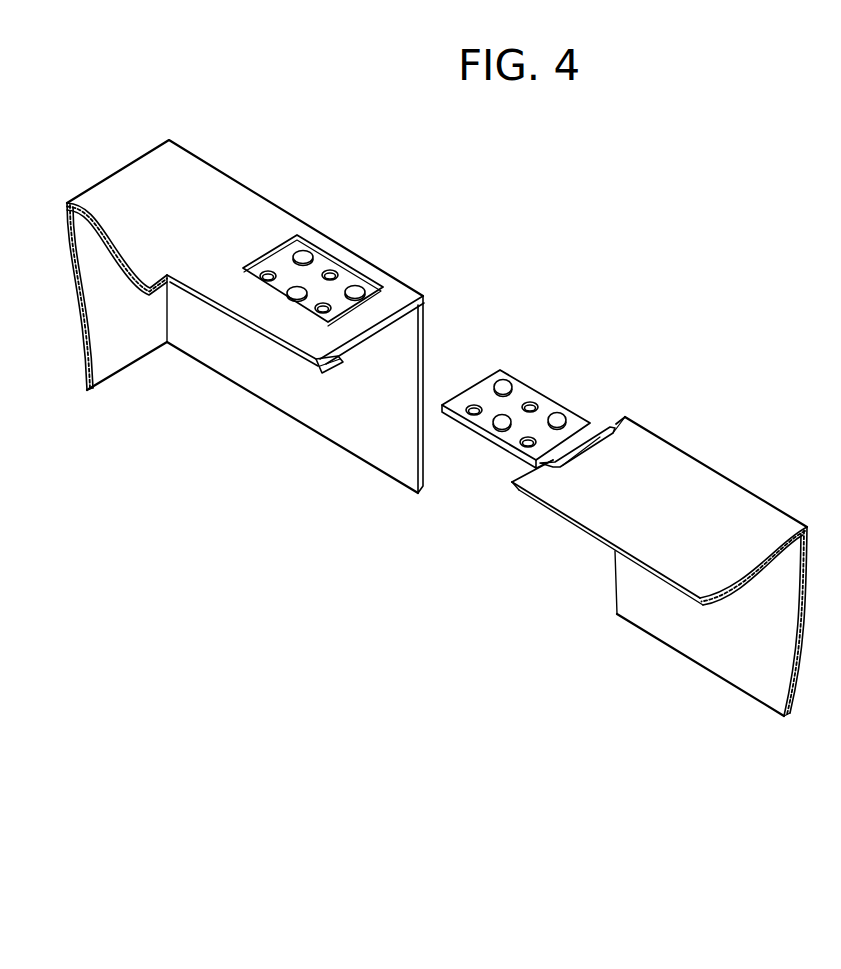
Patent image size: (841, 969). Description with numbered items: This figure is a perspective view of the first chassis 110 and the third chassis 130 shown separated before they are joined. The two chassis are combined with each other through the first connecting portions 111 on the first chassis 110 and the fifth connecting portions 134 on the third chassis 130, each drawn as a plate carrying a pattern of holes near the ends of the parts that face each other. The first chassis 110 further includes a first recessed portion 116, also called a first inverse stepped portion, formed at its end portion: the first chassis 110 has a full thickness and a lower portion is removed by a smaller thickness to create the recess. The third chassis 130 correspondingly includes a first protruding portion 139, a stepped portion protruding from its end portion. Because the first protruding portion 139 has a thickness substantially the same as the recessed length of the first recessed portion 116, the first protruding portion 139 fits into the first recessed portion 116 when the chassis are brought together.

The first chassis 110 is at (697, 482).
The first connecting portion 111 is at (535, 392).
The first recessed portion 116 is at (517, 487).
The third chassis 130 is at (237, 200).
The fifth connecting portion 134 is at (335, 250).
The first protruding portion 139 is at (320, 372).